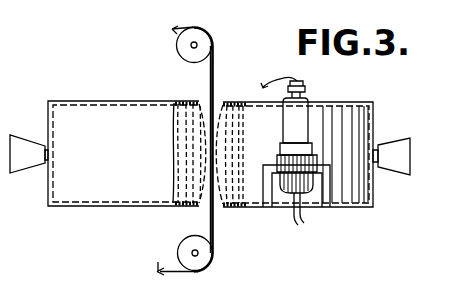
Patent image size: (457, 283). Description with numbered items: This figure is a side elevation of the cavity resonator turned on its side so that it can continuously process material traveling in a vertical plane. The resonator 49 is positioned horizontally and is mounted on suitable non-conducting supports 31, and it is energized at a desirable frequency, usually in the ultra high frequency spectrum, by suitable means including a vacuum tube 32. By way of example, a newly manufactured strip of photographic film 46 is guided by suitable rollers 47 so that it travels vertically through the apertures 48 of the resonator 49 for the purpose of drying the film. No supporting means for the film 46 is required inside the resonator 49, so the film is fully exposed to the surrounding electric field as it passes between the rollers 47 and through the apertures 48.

The non-conducting support 31 is at (386, 143).
The vacuum tube 32 is at (309, 117).
The strip of photographic film 46 is at (214, 77).
The rollers 47 is at (177, 48).
The apertures 48 is at (222, 208).
The resonator 49 is at (131, 99).